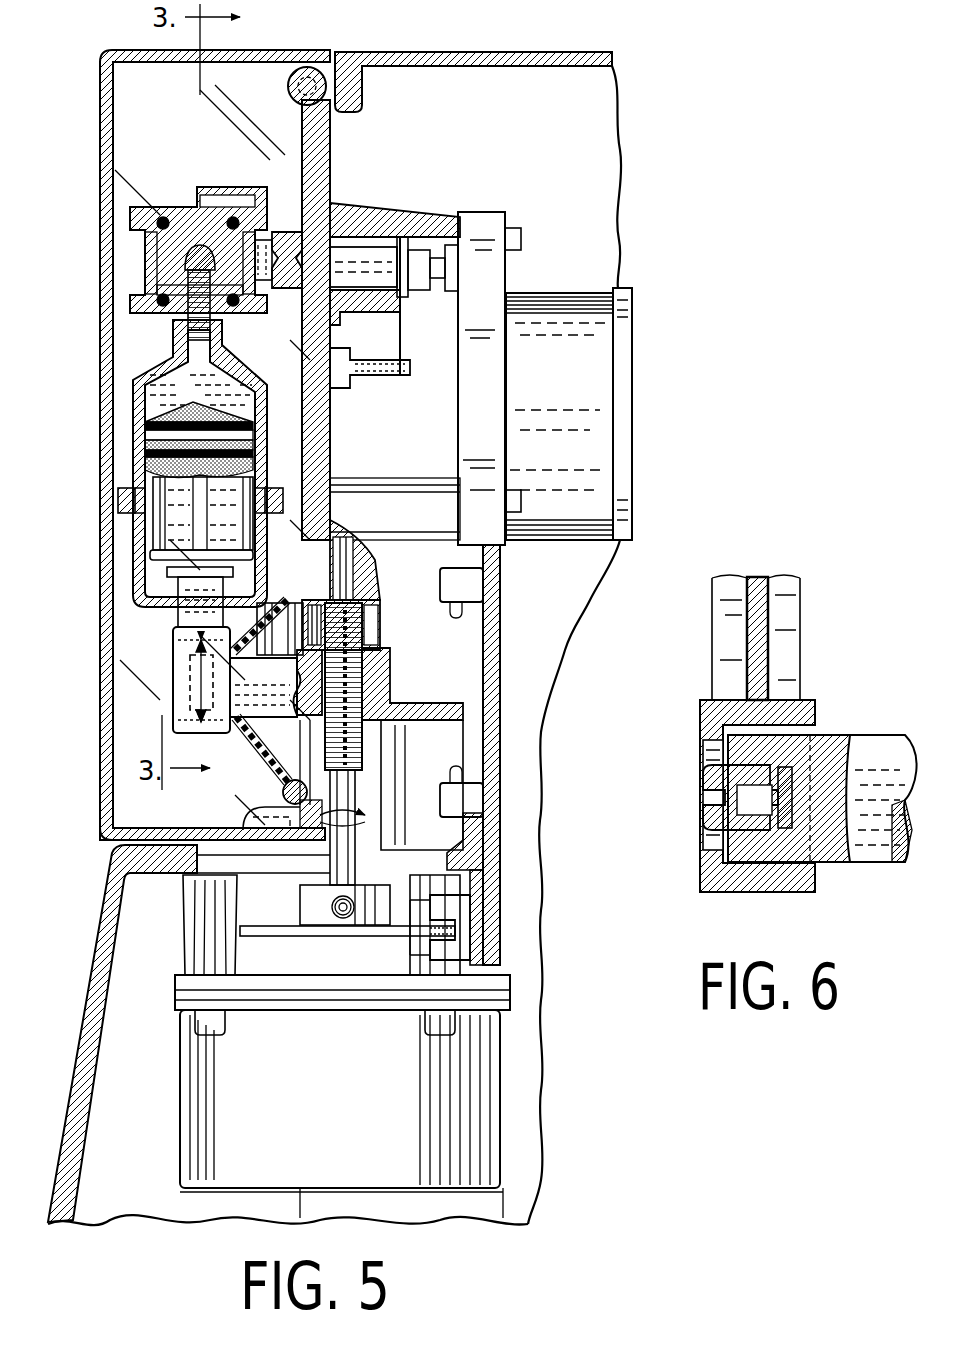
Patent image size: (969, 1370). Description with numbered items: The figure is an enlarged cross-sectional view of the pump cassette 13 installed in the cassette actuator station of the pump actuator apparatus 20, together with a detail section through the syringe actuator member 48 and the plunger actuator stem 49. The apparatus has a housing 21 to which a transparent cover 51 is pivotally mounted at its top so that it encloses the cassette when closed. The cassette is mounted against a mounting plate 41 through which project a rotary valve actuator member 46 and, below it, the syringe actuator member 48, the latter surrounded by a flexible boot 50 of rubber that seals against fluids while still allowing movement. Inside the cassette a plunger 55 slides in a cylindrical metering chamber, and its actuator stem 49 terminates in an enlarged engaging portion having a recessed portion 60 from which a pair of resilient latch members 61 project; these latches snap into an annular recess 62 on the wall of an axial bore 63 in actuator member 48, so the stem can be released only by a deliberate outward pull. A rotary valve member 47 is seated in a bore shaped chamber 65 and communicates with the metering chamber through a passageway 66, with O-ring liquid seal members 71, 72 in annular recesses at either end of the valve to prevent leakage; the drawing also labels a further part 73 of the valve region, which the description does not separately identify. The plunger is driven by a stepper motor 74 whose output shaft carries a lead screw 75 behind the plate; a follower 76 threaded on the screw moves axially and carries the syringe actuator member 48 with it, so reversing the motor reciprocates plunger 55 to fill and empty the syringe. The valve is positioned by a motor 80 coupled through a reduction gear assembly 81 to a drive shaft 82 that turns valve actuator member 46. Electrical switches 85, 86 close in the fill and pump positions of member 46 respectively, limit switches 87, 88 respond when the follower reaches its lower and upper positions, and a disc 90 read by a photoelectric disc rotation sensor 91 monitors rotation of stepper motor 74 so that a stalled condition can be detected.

In FIG. 5, the pump cassette 13 is at (134, 567).
In FIG. 5, the pump actuator apparatus 20 is at (85, 940).
In FIG. 5, the housing 21 is at (462, 52).
In FIG. 5, the mounting plate 41 is at (318, 440).
In FIG. 5, the rotary valve actuator member 46 is at (362, 248).
In FIG. 5, the rotary valve member 47 is at (160, 285).
In FIG. 5, the syringe actuator member 48 is at (240, 683).
In FIG. 6, the syringe actuator member 48 is at (820, 735).
In FIG. 5, the actuator stem 49 is at (200, 650).
In FIG. 6, the actuator stem 49 is at (735, 700).
In FIG. 5, the flexible boot 50 is at (262, 765).
In FIG. 5, the cover 51 is at (100, 97).
In FIG. 5, the plunger 55 is at (210, 430).
In FIG. 6, the recessed portion 60 is at (760, 890).
In FIG. 6, the resilient latch members 61 is at (740, 815).
In FIG. 6, the annular recess 62 is at (792, 782).
In FIG. 6, the axial bore 63 is at (725, 722).
In FIG. 5, the bore shaped chamber 65 is at (175, 246).
In FIG. 5, the passageway 66 is at (150, 325).
In FIG. 5, the O-ring liquid seal member 71 is at (165, 215).
In FIG. 5, the O-ring liquid seal member 72 is at (232, 212).
In FIG. 5, the bolt 73 is at (190, 265).
In FIG. 5, the stepper motor 74 is at (470, 1113).
In FIG. 5, the lead screw 75 is at (362, 745).
In FIG. 5, the follower 76 is at (390, 672).
In FIG. 5, the motor 80 is at (600, 385).
In FIG. 5, the reduction gear assembly 81 is at (497, 283).
In FIG. 5, the drive shaft 82 is at (436, 258).
In FIG. 5, the electrical switch 85 is at (296, 310).
In FIG. 5, the electrical switch 86 is at (345, 385).
In FIG. 5, the limit switch 87 is at (487, 793).
In FIG. 5, the limit switch 88 is at (485, 575).
In FIG. 5, the disc 90 is at (455, 935).
In FIG. 5, the photoelectric disc rotation sensor 91 is at (473, 915).